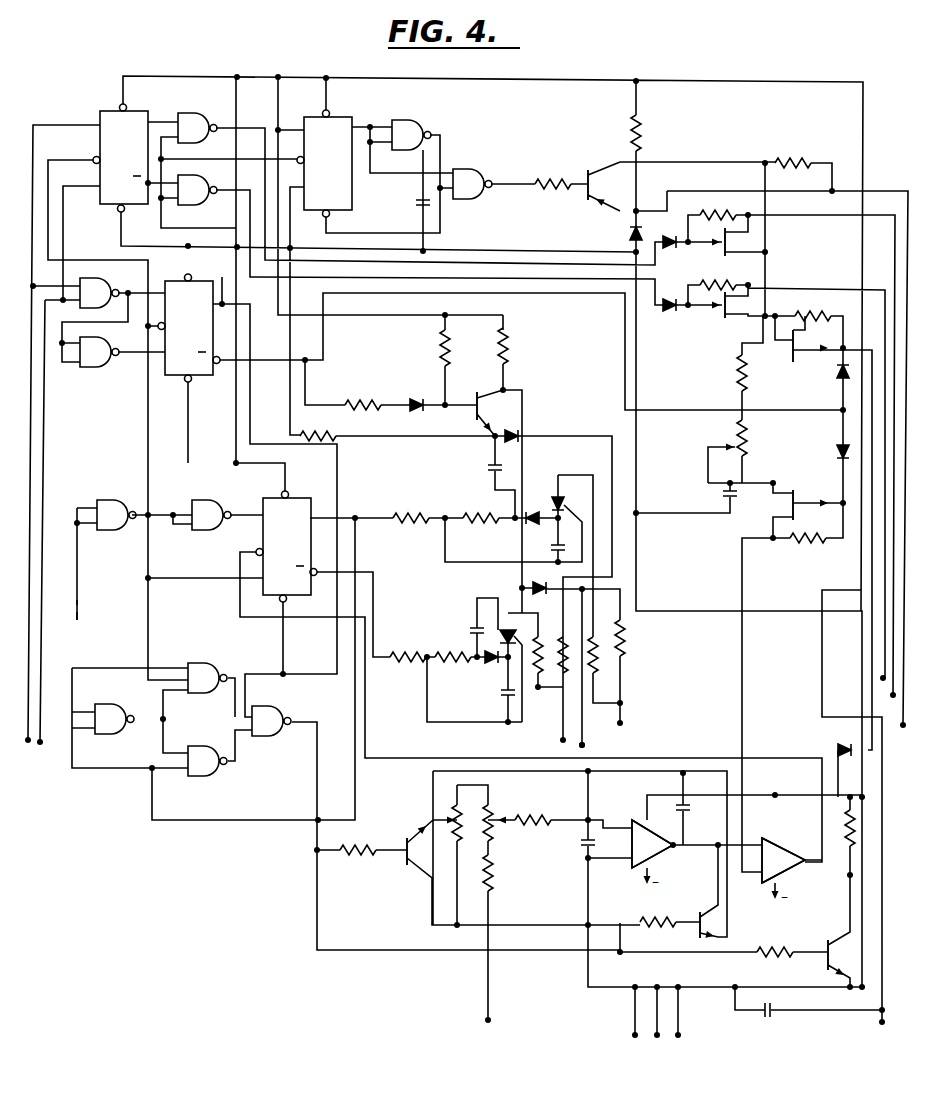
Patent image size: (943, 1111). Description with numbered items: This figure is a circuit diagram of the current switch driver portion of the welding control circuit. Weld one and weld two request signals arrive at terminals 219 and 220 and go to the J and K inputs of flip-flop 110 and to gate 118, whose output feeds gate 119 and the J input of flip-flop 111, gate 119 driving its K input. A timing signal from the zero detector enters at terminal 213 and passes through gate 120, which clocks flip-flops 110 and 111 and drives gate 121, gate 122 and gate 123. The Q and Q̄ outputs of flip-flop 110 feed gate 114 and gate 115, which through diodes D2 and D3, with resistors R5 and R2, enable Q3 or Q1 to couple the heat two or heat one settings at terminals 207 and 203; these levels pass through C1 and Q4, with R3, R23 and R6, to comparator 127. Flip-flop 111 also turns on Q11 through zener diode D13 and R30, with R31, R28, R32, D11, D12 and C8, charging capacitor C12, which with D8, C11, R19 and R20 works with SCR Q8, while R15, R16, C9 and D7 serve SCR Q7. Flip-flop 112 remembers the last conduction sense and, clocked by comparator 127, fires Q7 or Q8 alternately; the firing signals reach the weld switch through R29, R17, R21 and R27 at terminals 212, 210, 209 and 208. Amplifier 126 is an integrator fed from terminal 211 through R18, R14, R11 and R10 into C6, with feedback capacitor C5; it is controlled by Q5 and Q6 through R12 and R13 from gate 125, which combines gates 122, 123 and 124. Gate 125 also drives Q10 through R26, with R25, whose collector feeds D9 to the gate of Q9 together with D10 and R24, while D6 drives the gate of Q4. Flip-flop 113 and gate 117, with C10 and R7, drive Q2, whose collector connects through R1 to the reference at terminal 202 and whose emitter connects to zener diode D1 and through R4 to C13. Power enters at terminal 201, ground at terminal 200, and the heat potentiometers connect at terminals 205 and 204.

The flip-flop 110 is at (124, 157).
The flip-flop 111 is at (189, 327).
The flip-flop 112 is at (287, 548).
The flip-flop 113 is at (328, 163).
The gate 114 is at (197, 128).
The gate 115 is at (197, 190).
The gate 117 is at (472, 184).
The gate 118 is at (255, 214).
The gate 119 is at (99, 352).
The gate 120 is at (116, 515).
The gate 121 is at (211, 515).
The gate 122 is at (207, 678).
The gate 123 is at (114, 719).
The gate 124 is at (207, 761).
The gate 125 is at (271, 721).
The amplifier 126 is at (652, 844).
The comparator 127 is at (783, 860).
The ground terminal 200 is at (678, 1040).
The positive power supply terminal 201 is at (881, 1028).
The terminal 202 is at (900, 726).
The heat 1 input terminal 203 is at (880, 679).
The terminal 204 is at (632, 1037).
The terminal 205 is at (657, 1040).
The heat 2 input terminal 207 is at (890, 696).
The terminal 208 is at (623, 721).
The terminal 209 is at (585, 745).
The terminal 210 is at (582, 745).
The terminal 211 is at (485, 1021).
The terminal 212 is at (560, 741).
The terminal 213 is at (80, 608).
The terminal 219 is at (28, 744).
The terminal 220 is at (40, 746).
The resistor R1 is at (806, 160).
The resistor R2 is at (718, 280).
The resistor R3 is at (738, 380).
The resistor R4 is at (640, 136).
The resistor R5 is at (722, 208).
The resistor R6 is at (793, 548).
The resistor R7 is at (556, 180).
The resistor R10 is at (548, 816).
The resistor R11 is at (440, 816).
The resistor R12 is at (378, 875).
The resistor R13 is at (676, 916).
The potentiometer R14 is at (492, 832).
The resistor R15 is at (412, 652).
The resistor R16 is at (452, 652).
The resistor R17 is at (564, 680).
The resistor R18 is at (492, 884).
The resistor R19 is at (415, 512).
The resistor R20 is at (490, 512).
The resistor R21 is at (622, 640).
The potentiometer R23 is at (738, 440).
The resistor R24 is at (800, 312).
The resistor R25 is at (848, 848).
The resistor R26 is at (805, 950).
The resistor R27 is at (600, 660).
The resistor R28 is at (506, 358).
The resistor R29 is at (532, 668).
The resistor R30 is at (372, 396).
The resistor R31 is at (442, 355).
The resistor R32 is at (345, 440).
The capacitor C1 is at (720, 495).
The capacitor C5 is at (686, 814).
The capacitor C6 is at (582, 848).
The capacitor C8 is at (470, 628).
The capacitor C9 is at (502, 700).
The capacitor C10 is at (416, 208).
The capacitor C11 is at (550, 552).
The capacitor C12 is at (488, 474).
The capacitor C13 is at (770, 1018).
The zener diode D1 is at (632, 230).
The diode D2 is at (678, 240).
The diode D3 is at (678, 308).
The diode D6 is at (838, 458).
The diode D7 is at (492, 664).
The diode D8 is at (536, 514).
The diode D9 is at (840, 744).
The diode D10 is at (838, 376).
The diode D11 is at (518, 432).
The diode D12 is at (532, 592).
The zener diode D13 is at (416, 400).
The transistor Q1 is at (756, 302).
The transistor Q2 is at (603, 185).
The transistor Q3 is at (768, 252).
The transistor Q4 is at (790, 505).
The transistor Q5 is at (423, 853).
The transistor Q6 is at (698, 930).
The SCR Q7 is at (500, 622).
The SCR Q8 is at (556, 494).
The transistor Q9 is at (802, 345).
The transistor Q10 is at (826, 962).
The transistor Q11 is at (480, 390).